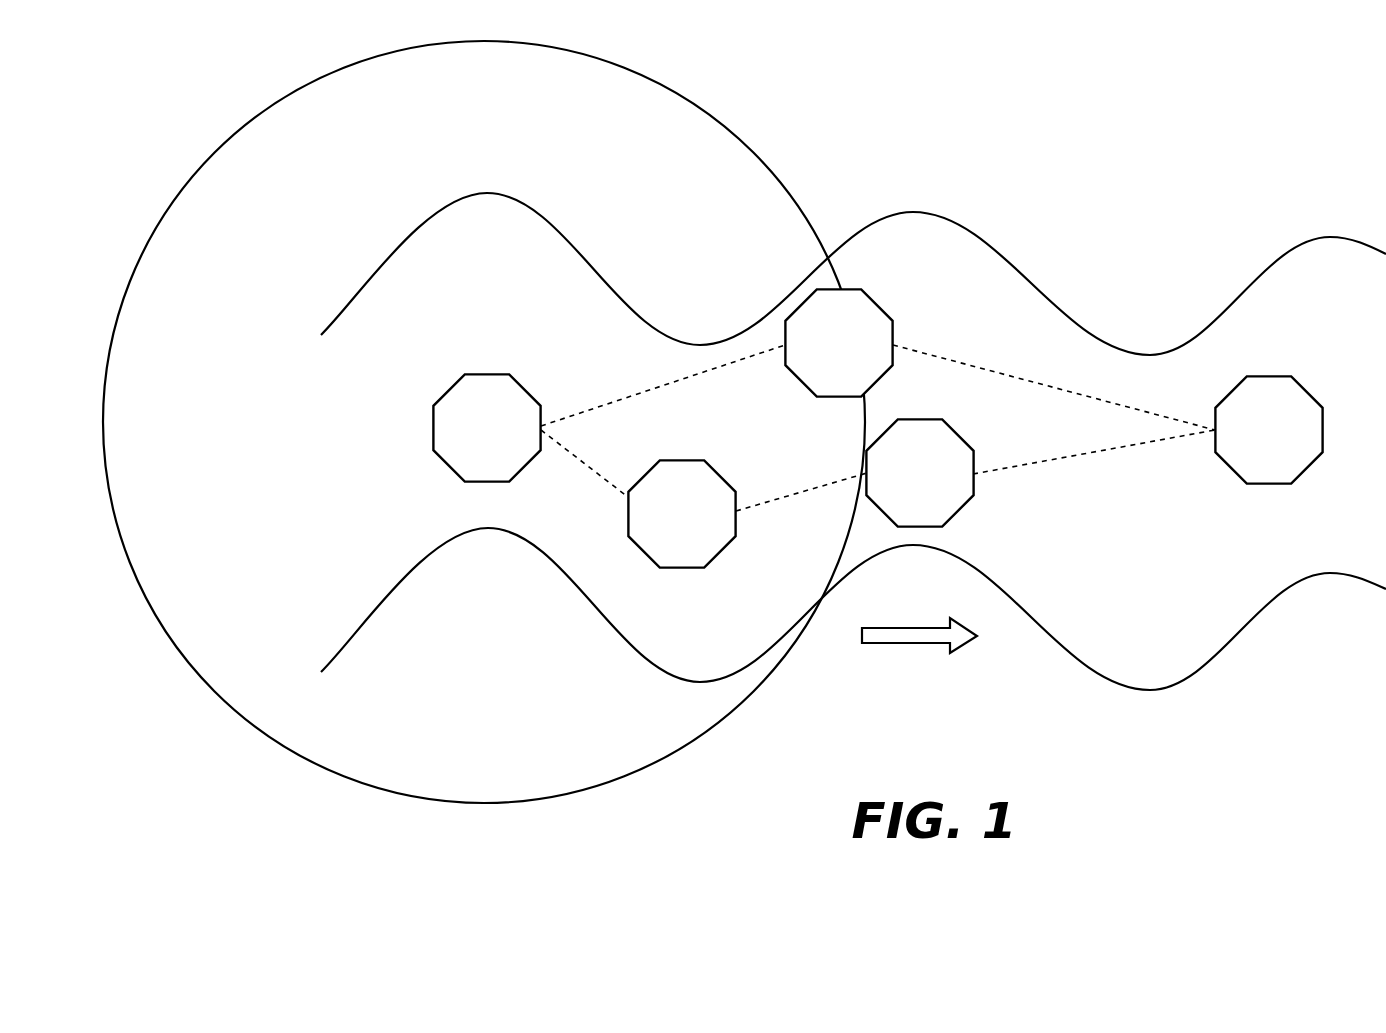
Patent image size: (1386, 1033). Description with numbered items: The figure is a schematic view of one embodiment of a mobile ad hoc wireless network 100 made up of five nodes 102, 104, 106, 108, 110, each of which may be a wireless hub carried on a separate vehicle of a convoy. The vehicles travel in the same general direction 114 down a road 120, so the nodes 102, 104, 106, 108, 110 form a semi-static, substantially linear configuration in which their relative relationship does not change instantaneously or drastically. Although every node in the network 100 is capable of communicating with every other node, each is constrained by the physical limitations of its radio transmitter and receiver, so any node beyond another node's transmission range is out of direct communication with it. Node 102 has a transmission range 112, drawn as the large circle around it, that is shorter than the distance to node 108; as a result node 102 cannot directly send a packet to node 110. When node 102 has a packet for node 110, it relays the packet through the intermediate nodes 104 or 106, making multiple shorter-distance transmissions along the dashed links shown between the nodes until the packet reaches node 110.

The mobile ad hoc wireless network 100 is at (1069, 232).
The node 102 is at (466, 443).
The node 104 is at (662, 529).
The node 106 is at (820, 358).
The node 108 is at (900, 488).
The node 110 is at (1250, 445).
The transmission range 112 is at (529, 378).
The general direction 114 is at (923, 644).
The road 120 is at (359, 503).